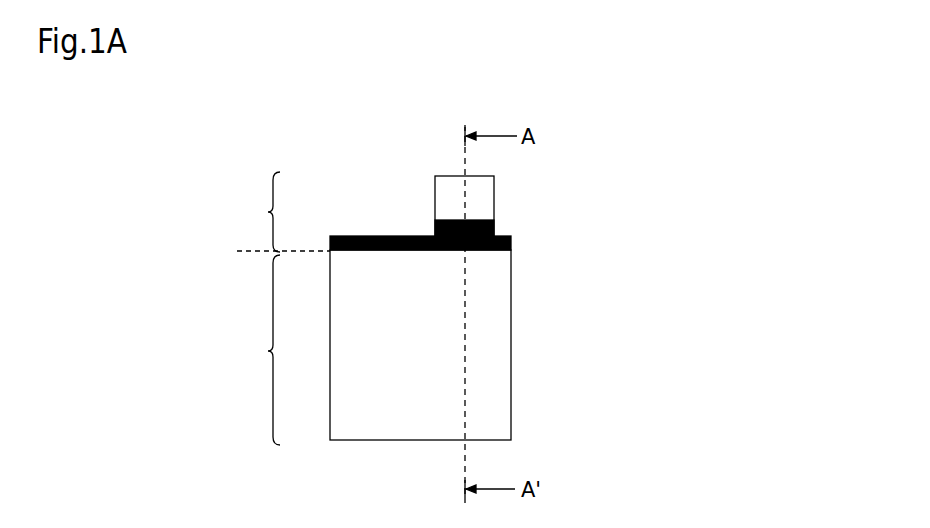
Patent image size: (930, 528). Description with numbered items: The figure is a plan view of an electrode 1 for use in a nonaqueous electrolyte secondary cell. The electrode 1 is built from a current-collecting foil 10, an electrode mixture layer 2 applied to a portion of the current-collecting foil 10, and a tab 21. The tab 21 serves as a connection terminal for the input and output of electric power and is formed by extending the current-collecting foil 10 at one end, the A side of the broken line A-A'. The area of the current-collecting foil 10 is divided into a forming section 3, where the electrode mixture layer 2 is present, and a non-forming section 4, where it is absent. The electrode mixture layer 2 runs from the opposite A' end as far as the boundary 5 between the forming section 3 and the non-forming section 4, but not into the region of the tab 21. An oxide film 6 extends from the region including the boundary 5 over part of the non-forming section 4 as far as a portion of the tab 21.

The electrode 1 is at (595, 155).
The electrode mixture layer 2 is at (500, 345).
The forming section 3 is at (263, 350).
The non-forming section 4 is at (261, 212).
The boundary 5 is at (477, 252).
The oxide film 6 is at (471, 226).
The current-collecting foil 10 is at (512, 412).
The tab 21 is at (453, 200).